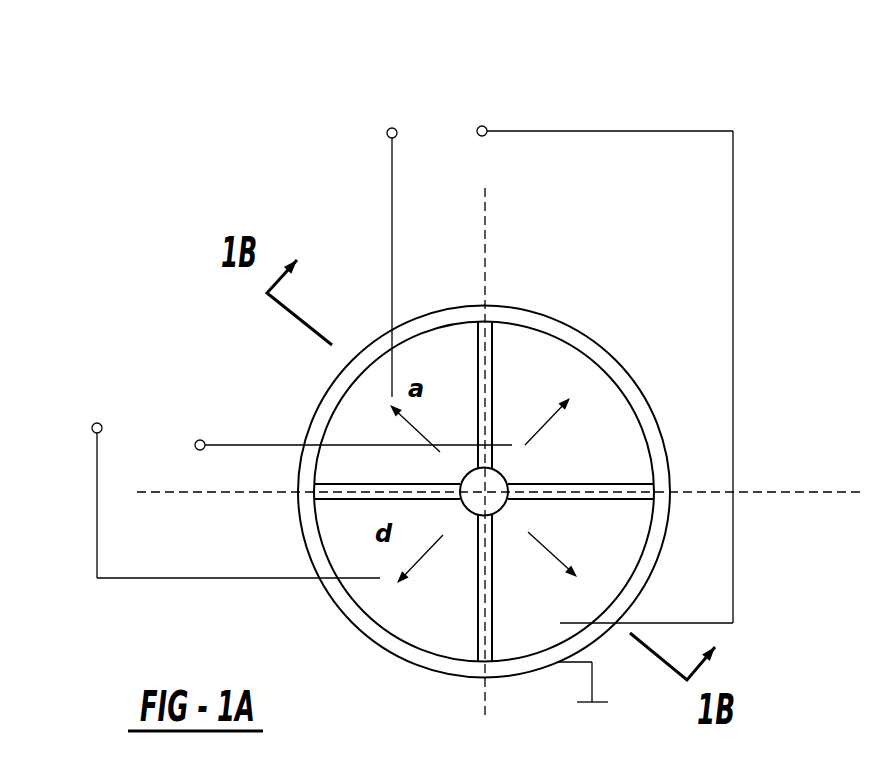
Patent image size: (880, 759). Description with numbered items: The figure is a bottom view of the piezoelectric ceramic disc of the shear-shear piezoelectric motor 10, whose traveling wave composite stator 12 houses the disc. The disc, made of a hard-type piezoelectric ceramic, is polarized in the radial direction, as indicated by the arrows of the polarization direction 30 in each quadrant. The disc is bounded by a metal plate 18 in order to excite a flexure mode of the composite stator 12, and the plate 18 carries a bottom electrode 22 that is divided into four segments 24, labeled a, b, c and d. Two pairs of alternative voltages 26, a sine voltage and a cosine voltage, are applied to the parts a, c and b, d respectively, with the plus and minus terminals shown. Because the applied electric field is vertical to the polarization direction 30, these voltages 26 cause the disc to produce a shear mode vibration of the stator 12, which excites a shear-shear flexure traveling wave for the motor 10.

The shear-shear piezoelectric motor 10 is at (756, 104).
The traveling wave composite stator 12 is at (762, 342).
The metal plate 18 is at (565, 320).
The bottom electrode 22 is at (598, 365).
The segments 24 is at (598, 543).
The alternative voltages 26 is at (507, 104).
The polarization direction 30 is at (542, 431).